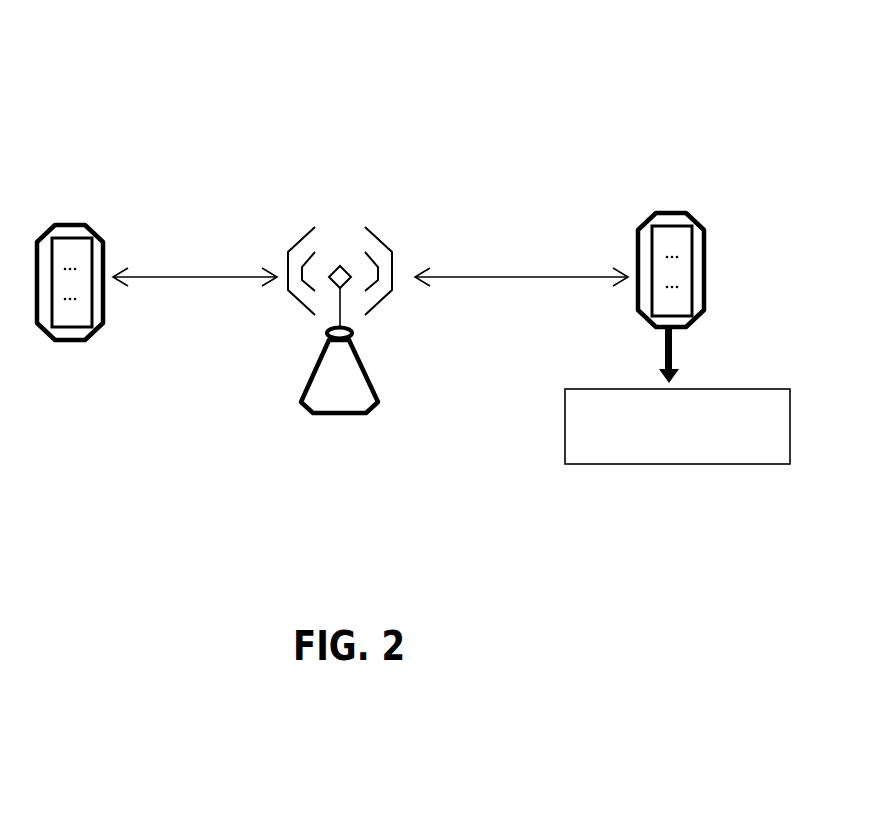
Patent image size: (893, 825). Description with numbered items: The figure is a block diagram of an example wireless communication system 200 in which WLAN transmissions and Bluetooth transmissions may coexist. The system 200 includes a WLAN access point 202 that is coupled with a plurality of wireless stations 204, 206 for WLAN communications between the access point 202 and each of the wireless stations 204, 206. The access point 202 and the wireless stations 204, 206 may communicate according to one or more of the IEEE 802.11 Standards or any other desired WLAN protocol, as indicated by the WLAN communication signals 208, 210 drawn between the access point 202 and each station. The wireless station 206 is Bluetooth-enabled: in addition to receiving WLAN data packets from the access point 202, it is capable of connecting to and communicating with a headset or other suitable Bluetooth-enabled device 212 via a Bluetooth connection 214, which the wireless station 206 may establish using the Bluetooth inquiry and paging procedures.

The wireless communication system 200 is at (310, 104).
The WLAN access point 202 is at (340, 415).
The wireless station 204 is at (63, 342).
The wireless station 206 is at (665, 213).
The WLAN communication signals 208 is at (202, 277).
The WLAN communication signals 210 is at (527, 277).
The Bluetooth-enabled device 212 is at (678, 464).
The Bluetooth connection 214 is at (678, 352).